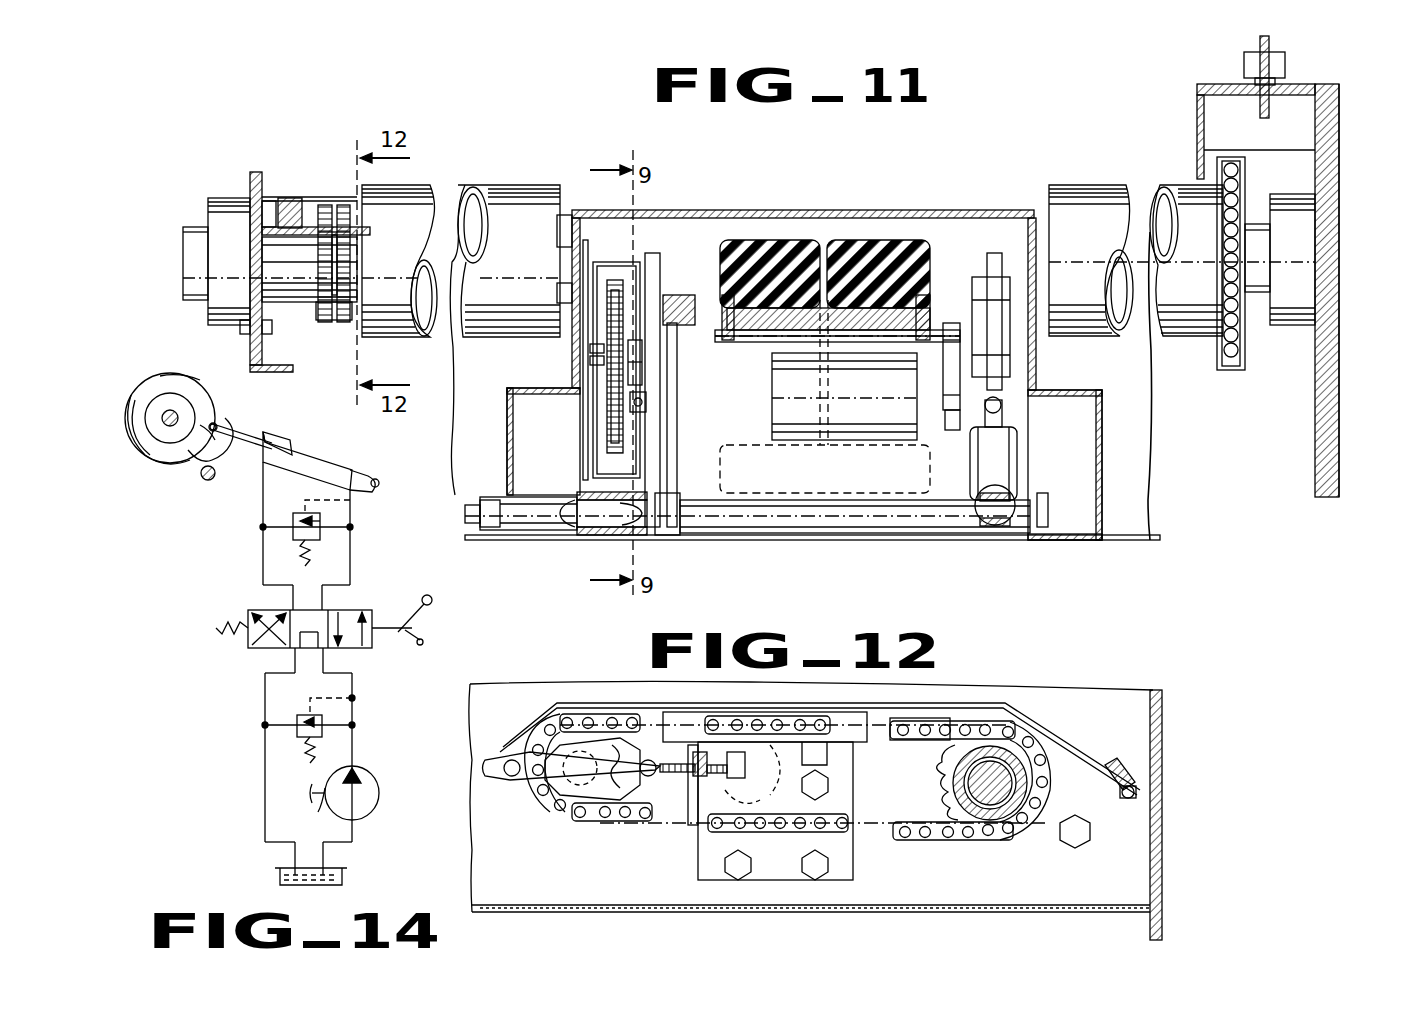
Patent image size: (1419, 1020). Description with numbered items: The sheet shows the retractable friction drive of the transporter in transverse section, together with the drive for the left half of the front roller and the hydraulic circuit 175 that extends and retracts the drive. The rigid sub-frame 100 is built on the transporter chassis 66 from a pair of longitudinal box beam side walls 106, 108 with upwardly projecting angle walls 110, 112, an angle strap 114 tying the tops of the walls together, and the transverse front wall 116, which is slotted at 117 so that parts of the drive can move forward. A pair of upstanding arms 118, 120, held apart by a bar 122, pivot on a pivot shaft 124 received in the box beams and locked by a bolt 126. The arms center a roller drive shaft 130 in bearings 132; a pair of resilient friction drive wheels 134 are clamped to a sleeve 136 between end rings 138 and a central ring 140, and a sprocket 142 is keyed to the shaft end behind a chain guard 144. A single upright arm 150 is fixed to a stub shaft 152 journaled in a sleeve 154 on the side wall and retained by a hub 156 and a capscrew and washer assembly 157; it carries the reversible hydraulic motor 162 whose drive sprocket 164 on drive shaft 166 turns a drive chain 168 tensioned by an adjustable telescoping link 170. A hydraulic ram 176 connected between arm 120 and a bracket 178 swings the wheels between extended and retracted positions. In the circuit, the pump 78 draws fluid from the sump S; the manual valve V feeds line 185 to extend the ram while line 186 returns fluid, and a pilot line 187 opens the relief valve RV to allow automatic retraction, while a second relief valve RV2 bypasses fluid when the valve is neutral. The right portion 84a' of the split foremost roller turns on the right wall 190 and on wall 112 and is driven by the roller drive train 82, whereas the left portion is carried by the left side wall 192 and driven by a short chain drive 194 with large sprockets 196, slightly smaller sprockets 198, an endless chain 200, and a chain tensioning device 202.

In FIG. 11, the transporter chassis 66 is at (1348, 440).
In FIG. 14, the pump 78 is at (340, 803).
In FIG. 11, the roller drive train 82 is at (1238, 378).
In FIG. 11, the right portion of foremost roller 84a' is at (1182, 245).
In FIG. 11, the sub-frame 100 is at (1108, 492).
In FIG. 11, the box beam side wall 106 is at (507, 432).
In FIG. 11, the box beam side wall 108 is at (1102, 427).
In FIG. 11, the angle wall 110 is at (583, 374).
In FIG. 11, the angle wall 112 is at (1036, 356).
In FIG. 11, the angle strap 114 is at (895, 210).
In FIG. 11, the front wall 116 is at (1151, 448).
In FIG. 12, the front wall 116 is at (1162, 855).
In FIG. 11, the slot 117 is at (572, 250).
In FIG. 11, the upstanding arm 118 is at (655, 253).
In FIG. 14, the upstanding arm 118 is at (204, 480).
In FIG. 11, the upstanding arm 120 is at (994, 253).
In FIG. 11, the bar 122 is at (868, 495).
In FIG. 11, the pivot shaft 124 is at (1045, 493).
In FIG. 11, the bolt 126 is at (612, 532).
In FIG. 11, the roller drive shaft 130 is at (943, 365).
In FIG. 11, the bearings 132 is at (678, 295).
In FIG. 11, the resilient friction drive wheels 134 is at (866, 240).
In FIG. 14, the resilient friction drive wheels 134 is at (128, 410).
In FIG. 11, the sleeve 136 is at (872, 330).
In FIG. 11, the end rings 138 is at (722, 300).
In FIG. 11, the central ring 140 is at (840, 342).
In FIG. 11, the sprocket 142 is at (612, 280).
In FIG. 11, the chain guard 144 is at (593, 440).
In FIG. 11, the upright arm 150 is at (677, 482).
In FIG. 11, the stub shaft 152 is at (580, 527).
In FIG. 11, the sleeve 154 is at (522, 515).
In FIG. 11, the hub 156 is at (662, 535).
In FIG. 11, the capscrew and washer assembly 157 is at (470, 513).
In FIG. 11, the reversible hydraulic motor 162 is at (850, 420).
In FIG. 11, the drive sprocket 164 is at (590, 348).
In FIG. 11, the drive shaft 166 is at (590, 361).
In FIG. 11, the drive chain 168 is at (628, 400).
In FIG. 11, the adjustable telescoping link 170 is at (638, 412).
In FIG. 14, the hydraulic circuit 175 is at (312, 431).
In FIG. 11, the hydraulic ram 176 is at (1017, 452).
In FIG. 14, the hydraulic ram 176 is at (310, 431).
In FIG. 11, the bracket 178 is at (993, 528).
In FIG. 14, the line 185 is at (350, 560).
In FIG. 14, the line 186 is at (263, 540).
In FIG. 14, the pilot line 187 is at (318, 495).
In FIG. 11, the right wall 190 is at (1339, 384).
In FIG. 11, the left side wall 192 is at (250, 355).
In FIG. 12, the left side wall 192 is at (1116, 690).
In FIG. 11, the short chain drive 194 is at (323, 205).
In FIG. 12, the short chain drive 194 is at (945, 718).
In FIG. 11, the large sprockets 196 is at (352, 260).
In FIG. 12, the large sprockets 196 is at (940, 788).
In FIG. 12, the smaller sprockets 198 is at (588, 798).
In FIG. 11, the endless chain 200 is at (336, 320).
In FIG. 12, the endless chain 200 is at (935, 843).
In FIG. 12, the chain tensioning device 202 is at (690, 790).
In FIG. 14, the manual valve V is at (250, 610).
In FIG. 14, the relief valve RV is at (297, 540).
In FIG. 14, the second relief valve RV2 is at (300, 737).
In FIG. 14, the sump S is at (280, 872).